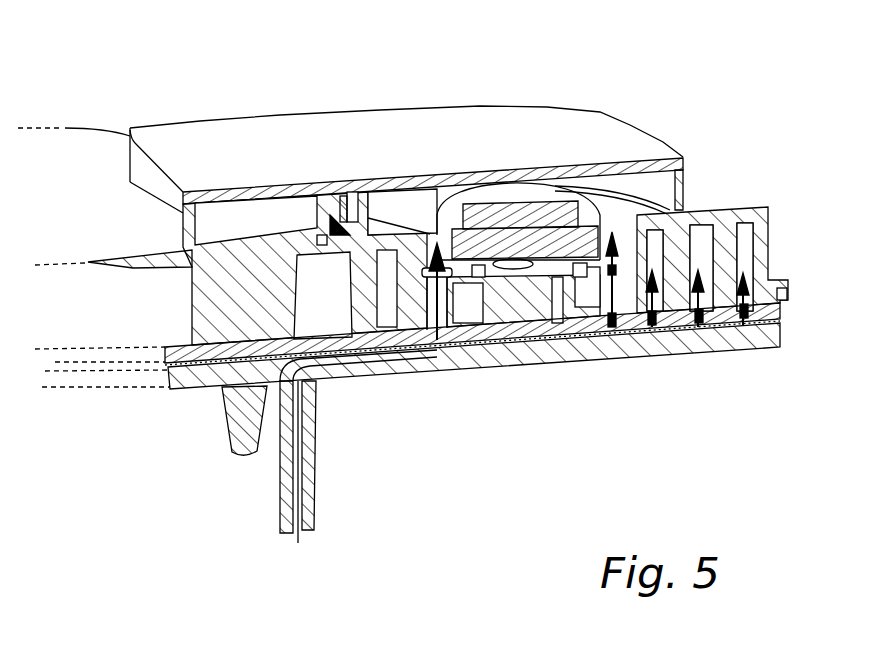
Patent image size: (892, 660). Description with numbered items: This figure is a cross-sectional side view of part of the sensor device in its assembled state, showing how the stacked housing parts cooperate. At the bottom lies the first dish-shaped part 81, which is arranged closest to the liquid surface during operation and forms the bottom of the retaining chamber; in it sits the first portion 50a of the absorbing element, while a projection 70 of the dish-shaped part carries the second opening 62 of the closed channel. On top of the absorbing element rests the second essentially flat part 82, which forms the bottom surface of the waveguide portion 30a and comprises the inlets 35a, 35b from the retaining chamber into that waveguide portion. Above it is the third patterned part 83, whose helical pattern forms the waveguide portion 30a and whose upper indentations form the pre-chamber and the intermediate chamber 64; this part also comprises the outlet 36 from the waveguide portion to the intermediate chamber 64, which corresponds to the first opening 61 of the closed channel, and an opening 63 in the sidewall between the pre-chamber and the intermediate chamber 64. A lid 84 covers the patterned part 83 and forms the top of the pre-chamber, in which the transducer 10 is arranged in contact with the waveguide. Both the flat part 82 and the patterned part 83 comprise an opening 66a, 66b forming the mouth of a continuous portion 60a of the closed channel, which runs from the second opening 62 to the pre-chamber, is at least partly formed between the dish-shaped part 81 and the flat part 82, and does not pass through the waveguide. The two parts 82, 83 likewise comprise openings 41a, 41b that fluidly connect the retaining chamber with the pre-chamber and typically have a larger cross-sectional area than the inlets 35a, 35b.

The transducer 10 is at (527, 200).
The waveguide portion 30a is at (343, 302).
The inlet 35a is at (683, 340).
The inlet 35b is at (671, 357).
The outlet 36 is at (275, 149).
The opening 41a is at (675, 349).
The opening 41b is at (623, 357).
The first portion of the absorbing element 50a is at (533, 357).
The continuous portion of the closed channel 60a is at (313, 397).
The first opening of the closed channel 61 is at (315, 212).
The second opening 62 is at (303, 543).
The opening in the sidewall 63 is at (320, 216).
The intermediate chamber 64 is at (237, 237).
The opening 66a is at (467, 348).
The opening 66b is at (443, 297).
The projection 70 is at (422, 220).
The first dish-shaped part 81 is at (770, 347).
The second essentially flat part 82 is at (180, 387).
The third patterned part 83 is at (765, 213).
The lid 84 is at (177, 137).